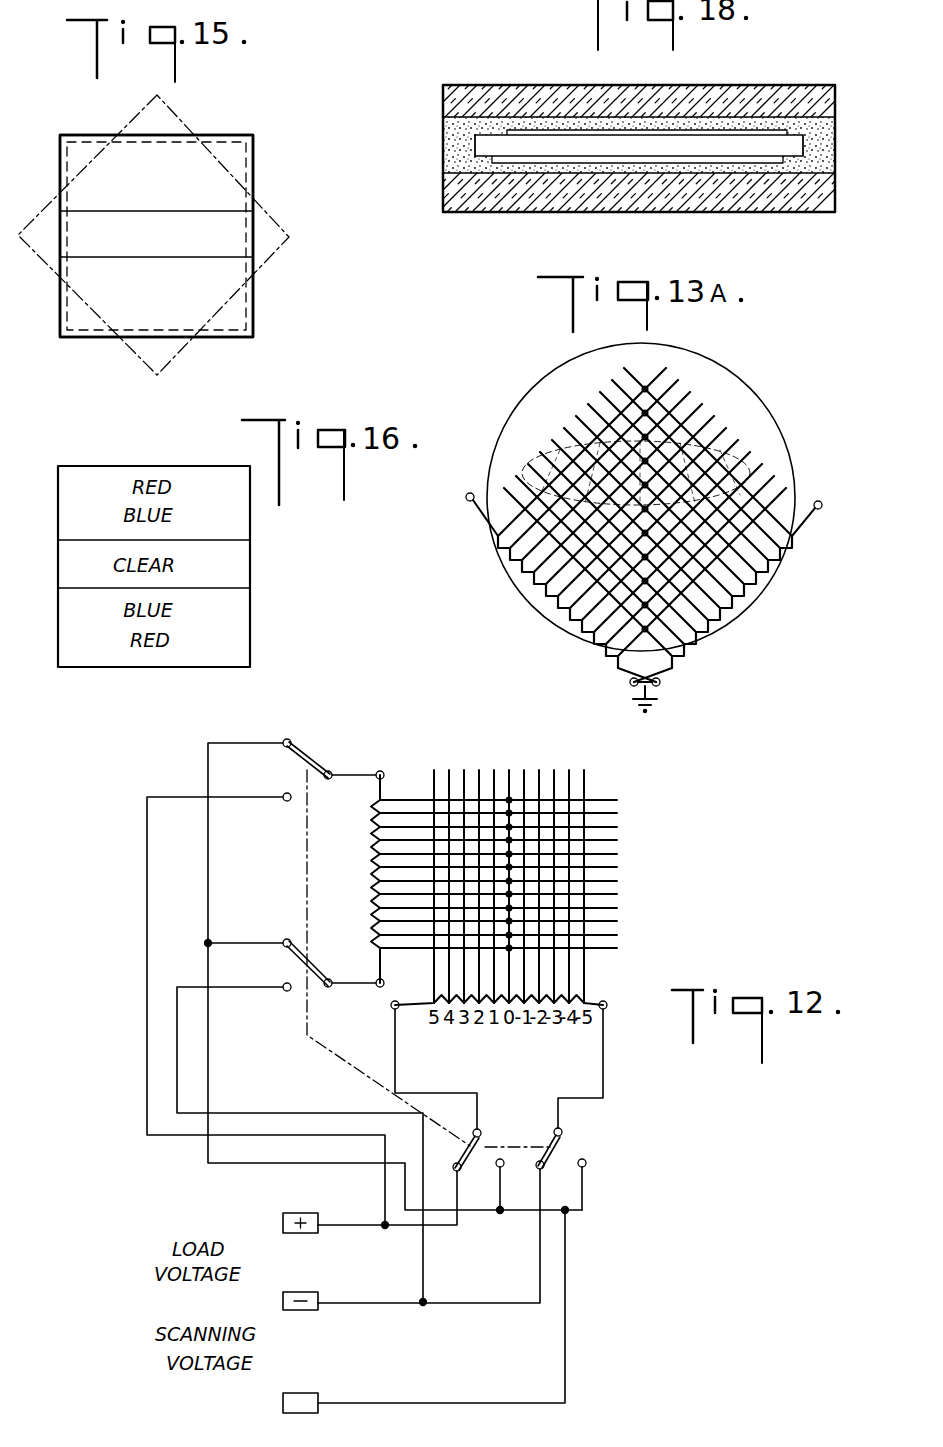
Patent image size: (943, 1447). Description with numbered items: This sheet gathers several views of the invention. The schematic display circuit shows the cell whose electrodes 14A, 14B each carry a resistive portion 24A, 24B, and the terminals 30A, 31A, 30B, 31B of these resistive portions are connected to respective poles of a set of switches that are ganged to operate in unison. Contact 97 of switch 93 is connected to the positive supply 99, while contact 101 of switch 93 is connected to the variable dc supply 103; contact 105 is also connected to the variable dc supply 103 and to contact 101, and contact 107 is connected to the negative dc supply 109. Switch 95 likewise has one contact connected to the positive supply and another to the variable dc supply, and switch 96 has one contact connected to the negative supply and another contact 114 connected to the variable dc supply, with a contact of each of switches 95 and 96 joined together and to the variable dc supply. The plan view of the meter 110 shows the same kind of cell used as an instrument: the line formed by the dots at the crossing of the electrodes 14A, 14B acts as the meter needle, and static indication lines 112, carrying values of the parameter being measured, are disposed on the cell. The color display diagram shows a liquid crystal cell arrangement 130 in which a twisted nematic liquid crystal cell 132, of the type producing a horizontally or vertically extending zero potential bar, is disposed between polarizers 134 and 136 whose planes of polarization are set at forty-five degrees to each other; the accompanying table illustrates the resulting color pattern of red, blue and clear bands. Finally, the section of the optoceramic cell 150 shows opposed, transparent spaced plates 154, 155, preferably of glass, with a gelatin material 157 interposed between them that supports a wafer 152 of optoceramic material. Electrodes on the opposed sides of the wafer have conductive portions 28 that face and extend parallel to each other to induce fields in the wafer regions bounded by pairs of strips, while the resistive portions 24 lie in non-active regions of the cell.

In FIG. 15, the liquid crystal cell arrangement 130 is at (270, 131).
In FIG. 15, the liquid crystal cell 132 is at (234, 145).
In FIG. 15, the polarizer 134 is at (300, 212).
In FIG. 15, the polarizer 136 is at (255, 158).
In FIG. 18, the cell 150 is at (678, 217).
In FIG. 18, the wafer 152 is at (591, 152).
In FIG. 18, the transparent plate 154 is at (512, 101).
In FIG. 18, the transparent plate 155 is at (543, 202).
In FIG. 18, the gelatin material 157 is at (457, 147).
In FIG. 18, the conductive portions 28 is at (744, 133).
In FIG. 18, the resistive portions 24 is at (799, 132).
In FIG. 13A, the meter 110 is at (817, 390).
In FIG. 13A, the indication lines 112 is at (765, 494).
In FIG. 12, the indication lines 112 is at (496, 1167).
In FIG. 13A, the electrode 14A is at (784, 508).
In FIG. 12, the electrode 14A is at (597, 978).
In FIG. 13A, the electrode 14B is at (498, 503).
In FIG. 12, the electrode 14B is at (413, 787).
In FIG. 13A, the resistive portion 24A is at (721, 606).
In FIG. 12, the resistive portion 24A is at (512, 1030).
In FIG. 13A, the resistive portion 24B is at (543, 593).
In FIG. 12, the resistive portion 24B is at (370, 903).
In FIG. 12, the terminal 30A is at (391, 1008).
In FIG. 12, the terminal 30B is at (381, 771).
In FIG. 12, the terminal 31A is at (607, 1008).
In FIG. 12, the terminal 31B is at (384, 985).
In FIG. 12, the switch 93 is at (318, 750).
In FIG. 12, the switch 95 is at (493, 1121).
In FIG. 12, the switch 96 is at (578, 1146).
In FIG. 12, the contact 97 is at (286, 803).
In FIG. 12, the positive supply 99 is at (298, 1213).
In FIG. 12, the contact 101 is at (395, 960).
In FIG. 12, the variable dc supply 103 is at (302, 1393).
In FIG. 12, the contact 105 is at (290, 938).
In FIG. 12, the contact 107 is at (286, 992).
In FIG. 12, the negative dc supply 109 is at (303, 1292).
In FIG. 12, the switch contact 114 is at (586, 1165).